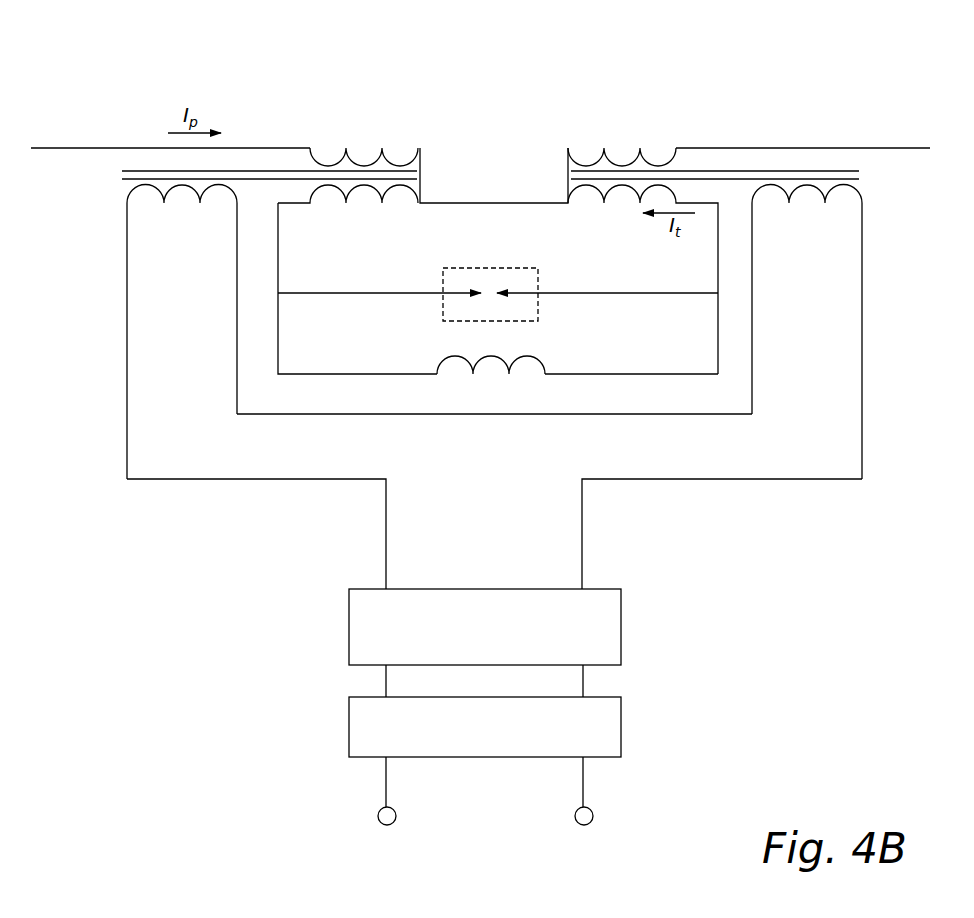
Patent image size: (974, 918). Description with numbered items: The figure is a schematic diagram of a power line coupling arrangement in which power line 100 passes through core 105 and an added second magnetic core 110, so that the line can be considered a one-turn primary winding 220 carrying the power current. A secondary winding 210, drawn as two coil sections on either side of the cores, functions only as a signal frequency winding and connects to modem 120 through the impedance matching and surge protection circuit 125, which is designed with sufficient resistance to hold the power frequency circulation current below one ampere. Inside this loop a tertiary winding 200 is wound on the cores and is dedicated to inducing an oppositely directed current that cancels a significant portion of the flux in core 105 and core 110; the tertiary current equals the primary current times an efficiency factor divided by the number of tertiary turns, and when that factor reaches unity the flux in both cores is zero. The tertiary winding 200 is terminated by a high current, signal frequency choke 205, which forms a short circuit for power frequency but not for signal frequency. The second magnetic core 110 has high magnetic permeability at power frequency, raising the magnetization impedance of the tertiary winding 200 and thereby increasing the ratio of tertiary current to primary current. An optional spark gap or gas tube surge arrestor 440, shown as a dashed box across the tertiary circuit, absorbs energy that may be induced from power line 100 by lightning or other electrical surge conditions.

The power line 100 is at (728, 147).
The core 105 is at (120, 178).
The second magnetic core 110 is at (863, 173).
The modem 120 is at (626, 730).
The impedance matching and surge protection circuit 125 is at (626, 626).
The tertiary winding 200 is at (582, 204).
The signal frequency choke 205 is at (500, 379).
The secondary winding 210 is at (217, 206).
The primary winding 220 is at (619, 146).
The spark gap or gas tube surge arrestor 440 is at (531, 324).